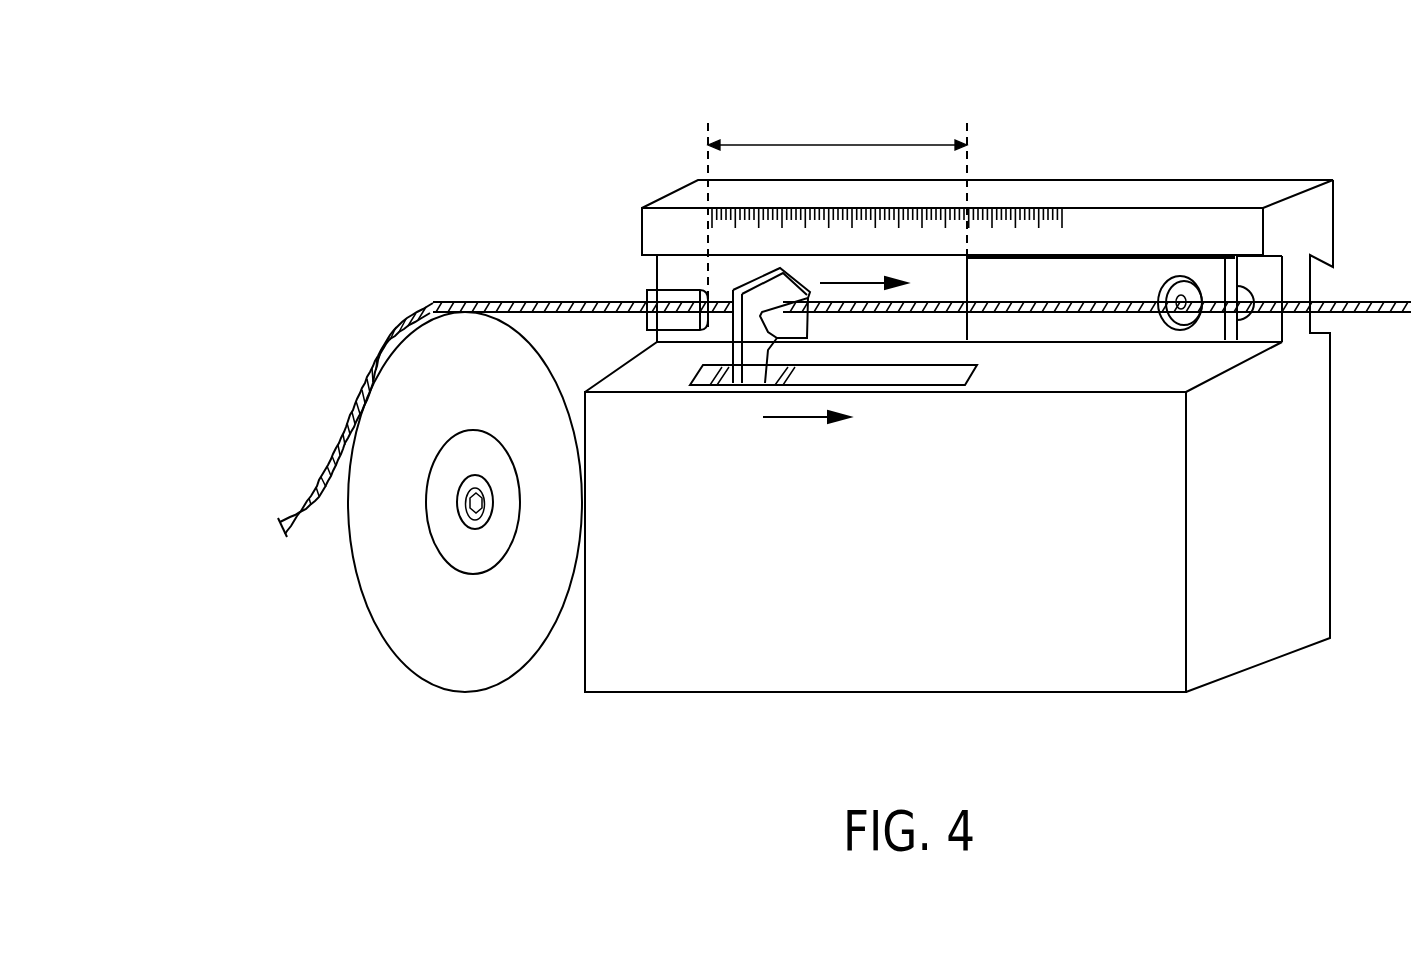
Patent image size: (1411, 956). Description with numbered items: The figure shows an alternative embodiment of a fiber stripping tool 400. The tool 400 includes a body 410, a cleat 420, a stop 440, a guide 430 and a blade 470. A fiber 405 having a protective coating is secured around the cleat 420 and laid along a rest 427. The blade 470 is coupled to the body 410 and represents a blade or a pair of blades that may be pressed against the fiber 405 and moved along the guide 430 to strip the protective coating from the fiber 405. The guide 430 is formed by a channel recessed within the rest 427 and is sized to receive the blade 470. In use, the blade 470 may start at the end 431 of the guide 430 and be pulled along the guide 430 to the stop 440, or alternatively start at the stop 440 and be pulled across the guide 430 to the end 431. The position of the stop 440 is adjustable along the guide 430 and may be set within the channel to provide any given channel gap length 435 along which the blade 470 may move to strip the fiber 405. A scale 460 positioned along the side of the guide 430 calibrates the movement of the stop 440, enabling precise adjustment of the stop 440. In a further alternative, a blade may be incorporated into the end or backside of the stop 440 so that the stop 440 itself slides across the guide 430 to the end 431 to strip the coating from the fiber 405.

The fiber stripping tool 400 is at (278, 128).
The fiber 405 is at (303, 485).
The body 410 is at (715, 662).
The cleat 420 is at (427, 645).
The rest 427 is at (645, 293).
The guide 430 is at (943, 273).
The end 431 is at (707, 290).
The channel gap length 435 is at (837, 183).
The stop 440 is at (1077, 273).
The scale 460 is at (1056, 210).
The blade 470 is at (753, 367).